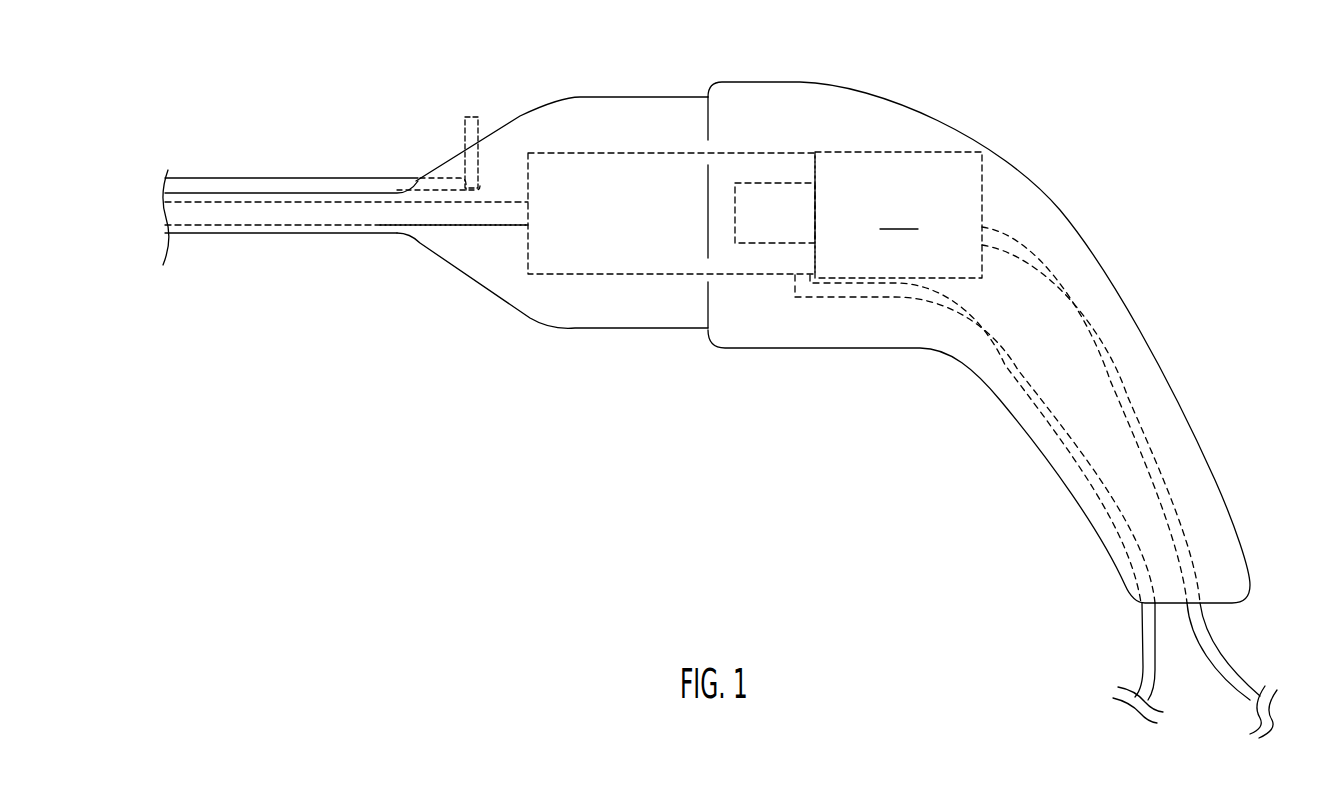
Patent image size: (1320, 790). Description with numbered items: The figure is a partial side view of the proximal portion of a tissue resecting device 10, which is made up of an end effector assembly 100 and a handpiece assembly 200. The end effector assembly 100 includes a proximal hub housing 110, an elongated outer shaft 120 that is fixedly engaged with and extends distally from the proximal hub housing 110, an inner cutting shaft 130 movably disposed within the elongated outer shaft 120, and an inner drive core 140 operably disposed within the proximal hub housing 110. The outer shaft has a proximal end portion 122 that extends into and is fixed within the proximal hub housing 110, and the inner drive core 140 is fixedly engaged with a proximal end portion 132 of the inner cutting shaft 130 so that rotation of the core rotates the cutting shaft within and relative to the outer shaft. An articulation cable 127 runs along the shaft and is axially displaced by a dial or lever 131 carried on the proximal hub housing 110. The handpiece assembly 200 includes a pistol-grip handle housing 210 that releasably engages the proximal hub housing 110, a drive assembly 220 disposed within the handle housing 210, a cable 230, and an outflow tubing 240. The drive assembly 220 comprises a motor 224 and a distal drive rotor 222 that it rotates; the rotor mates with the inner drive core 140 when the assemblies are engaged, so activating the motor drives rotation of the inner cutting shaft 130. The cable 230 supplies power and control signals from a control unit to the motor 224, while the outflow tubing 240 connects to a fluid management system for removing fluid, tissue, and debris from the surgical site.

The tissue resecting device 10 is at (436, 55).
The end effector assembly 100 is at (391, 366).
The proximal hub housing 110 is at (660, 72).
The elongated outer shaft 120 is at (231, 191).
The proximal end portion 122 is at (395, 190).
The articulation cable 127 is at (277, 178).
The inner cutting shaft 130 is at (278, 224).
The dial or lever 131 is at (475, 112).
The proximal end portion 132 is at (383, 224).
The inner drive core 140 is at (610, 237).
The handpiece assembly 200 is at (1263, 65).
The handle housing 210 is at (1097, 237).
The drive assembly 220 is at (927, 152).
The distal drive rotor 222 is at (785, 225).
The motor 224 is at (899, 216).
The cable 230 is at (1213, 641).
The outflow tubing 240 is at (1142, 648).